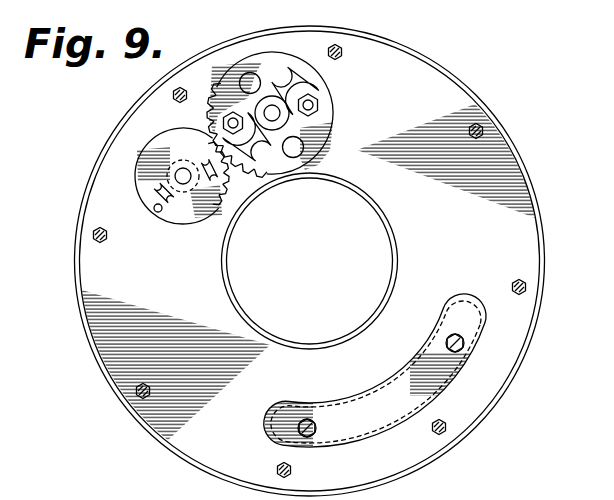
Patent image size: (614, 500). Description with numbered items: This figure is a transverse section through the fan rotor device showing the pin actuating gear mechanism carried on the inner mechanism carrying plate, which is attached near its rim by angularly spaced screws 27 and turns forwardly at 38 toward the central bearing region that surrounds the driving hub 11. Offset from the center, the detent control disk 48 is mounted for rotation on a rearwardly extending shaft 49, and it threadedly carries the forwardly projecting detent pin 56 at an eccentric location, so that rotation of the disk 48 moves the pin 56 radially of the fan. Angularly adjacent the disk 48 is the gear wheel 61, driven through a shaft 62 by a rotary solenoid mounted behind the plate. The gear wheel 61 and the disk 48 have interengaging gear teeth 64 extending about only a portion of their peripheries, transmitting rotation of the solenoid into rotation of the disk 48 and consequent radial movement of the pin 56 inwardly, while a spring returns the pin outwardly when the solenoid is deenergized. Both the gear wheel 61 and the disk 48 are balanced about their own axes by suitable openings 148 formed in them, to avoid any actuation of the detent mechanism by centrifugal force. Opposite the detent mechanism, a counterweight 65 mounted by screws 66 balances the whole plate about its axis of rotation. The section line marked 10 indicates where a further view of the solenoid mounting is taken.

The section line 10- 10 is at (253, 4).
The driving hub 11 is at (213, 150).
The screws 27 is at (483, 128).
The forwardly extending portion of plate 38 is at (392, 229).
The detent control disk 48 is at (188, 218).
The shaft 49 is at (207, 213).
The detent pin 56 is at (158, 212).
The gear wheel 61 is at (330, 118).
The shaft 62 is at (272, 111).
The gear teeth 64 is at (206, 134).
The counterweight 65 is at (298, 403).
The screws 66 is at (313, 421).
The openings 148 is at (158, 193).